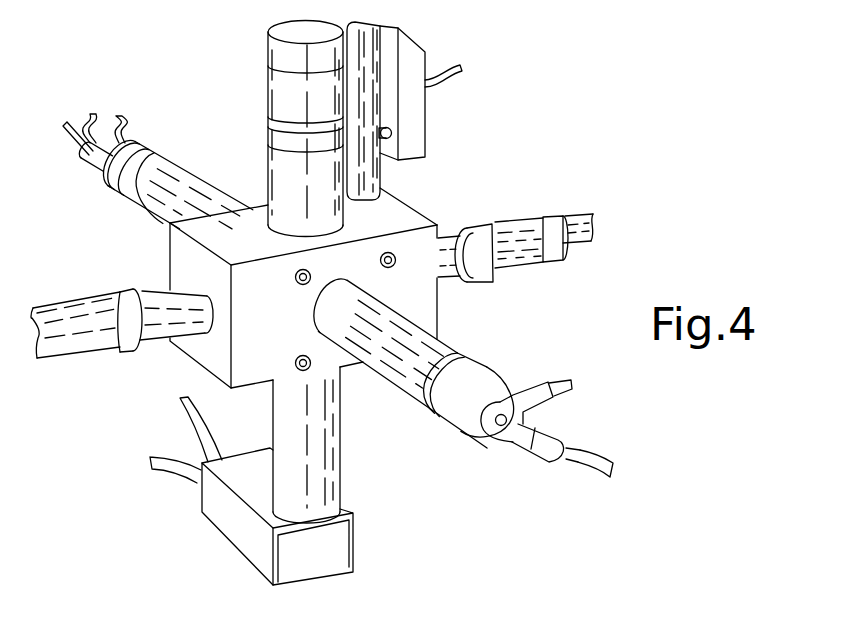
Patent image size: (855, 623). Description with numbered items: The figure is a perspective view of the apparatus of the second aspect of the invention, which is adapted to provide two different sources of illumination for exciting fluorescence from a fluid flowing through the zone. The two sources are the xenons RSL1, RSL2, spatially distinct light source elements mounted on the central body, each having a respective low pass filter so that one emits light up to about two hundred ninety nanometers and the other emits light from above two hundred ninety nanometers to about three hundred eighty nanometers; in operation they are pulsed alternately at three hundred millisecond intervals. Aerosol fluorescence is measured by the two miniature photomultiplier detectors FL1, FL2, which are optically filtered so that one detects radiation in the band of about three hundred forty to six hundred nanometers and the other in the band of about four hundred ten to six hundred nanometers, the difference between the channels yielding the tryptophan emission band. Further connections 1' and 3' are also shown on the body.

The xenon RSL2 is at (293, 33).
The xenon RSL1 is at (248, 488).
The miniature photomultiplier detector FL1 is at (483, 390).
The miniature photomultiplier detector FL2 is at (147, 167).
The connector 1' is at (515, 223).
The connector 3' is at (122, 354).